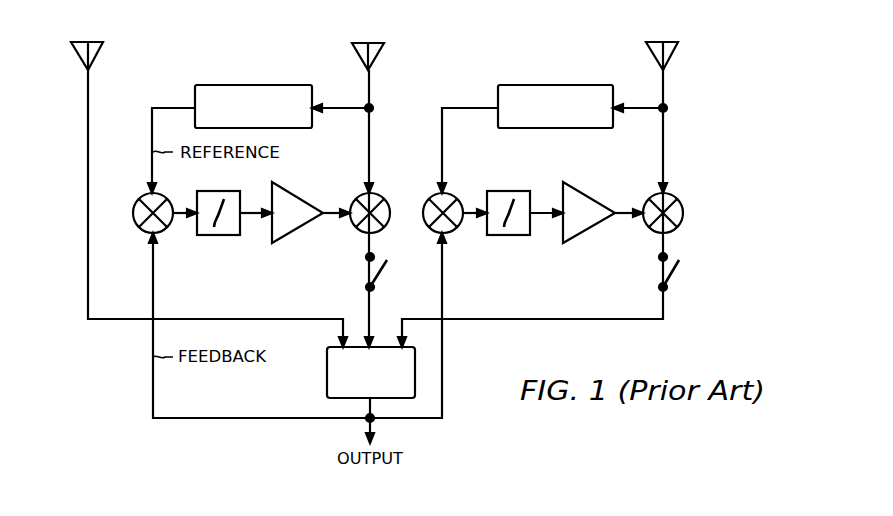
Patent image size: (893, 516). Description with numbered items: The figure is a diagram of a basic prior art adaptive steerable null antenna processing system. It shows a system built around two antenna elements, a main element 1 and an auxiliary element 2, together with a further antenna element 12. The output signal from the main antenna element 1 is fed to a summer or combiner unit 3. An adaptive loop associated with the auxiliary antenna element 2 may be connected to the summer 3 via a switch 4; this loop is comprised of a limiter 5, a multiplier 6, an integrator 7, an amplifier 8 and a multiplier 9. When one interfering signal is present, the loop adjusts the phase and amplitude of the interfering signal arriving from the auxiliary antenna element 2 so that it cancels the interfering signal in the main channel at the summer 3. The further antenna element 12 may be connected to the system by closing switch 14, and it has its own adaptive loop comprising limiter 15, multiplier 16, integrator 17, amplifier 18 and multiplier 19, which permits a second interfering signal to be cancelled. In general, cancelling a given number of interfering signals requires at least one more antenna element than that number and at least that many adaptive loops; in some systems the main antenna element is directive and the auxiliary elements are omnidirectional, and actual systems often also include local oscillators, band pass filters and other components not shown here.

The main antenna element 1 is at (104, 46).
The auxiliary antenna element 2 is at (385, 48).
The antenna element 12 is at (680, 47).
The summer 3 is at (327, 382).
The switch 4 is at (382, 277).
The switch 14 is at (681, 277).
The limiter 5 is at (241, 85).
The limiter 15 is at (556, 85).
The multiplier 6 is at (135, 204).
The multiplier 9 is at (384, 198).
The multiplier 16 is at (455, 196).
The multiplier 19 is at (678, 198).
The integrator 7 is at (205, 191).
The integrator 17 is at (508, 191).
The amplifier 8 is at (288, 192).
The amplifier 18 is at (588, 193).